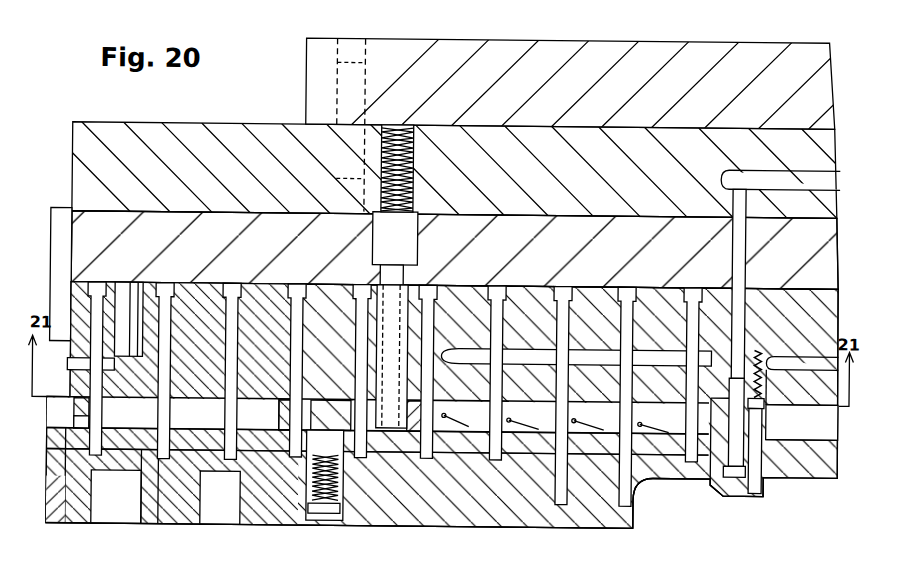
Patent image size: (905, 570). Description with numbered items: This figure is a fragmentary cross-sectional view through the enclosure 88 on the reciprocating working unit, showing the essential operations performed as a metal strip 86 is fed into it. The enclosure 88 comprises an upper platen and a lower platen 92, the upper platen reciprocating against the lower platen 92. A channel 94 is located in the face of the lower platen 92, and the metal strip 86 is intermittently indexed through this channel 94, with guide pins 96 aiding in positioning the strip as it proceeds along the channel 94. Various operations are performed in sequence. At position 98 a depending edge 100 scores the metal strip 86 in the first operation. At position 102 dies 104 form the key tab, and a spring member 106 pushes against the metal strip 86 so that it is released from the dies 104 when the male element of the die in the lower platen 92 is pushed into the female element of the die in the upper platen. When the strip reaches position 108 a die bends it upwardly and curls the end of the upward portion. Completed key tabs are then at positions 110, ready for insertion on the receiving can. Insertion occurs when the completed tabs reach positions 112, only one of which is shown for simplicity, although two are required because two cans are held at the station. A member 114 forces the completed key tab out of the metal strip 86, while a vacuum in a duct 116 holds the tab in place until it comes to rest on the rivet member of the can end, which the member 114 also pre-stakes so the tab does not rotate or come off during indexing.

The metal strip 86 is at (177, 460).
The enclosure 88 is at (608, 45).
The lower platen 92 is at (57, 503).
The channel 94 is at (77, 424).
The guide pins 96 is at (230, 462).
The position 98 is at (123, 420).
The depending edge 100 is at (153, 415).
The position 102 is at (263, 430).
The dies 104 is at (280, 425).
The spring member 106 is at (328, 513).
The position 108 is at (480, 525).
The positions 110 is at (665, 496).
The positions 112 is at (787, 475).
The member 114 is at (727, 486).
The duct 116 is at (738, 266).